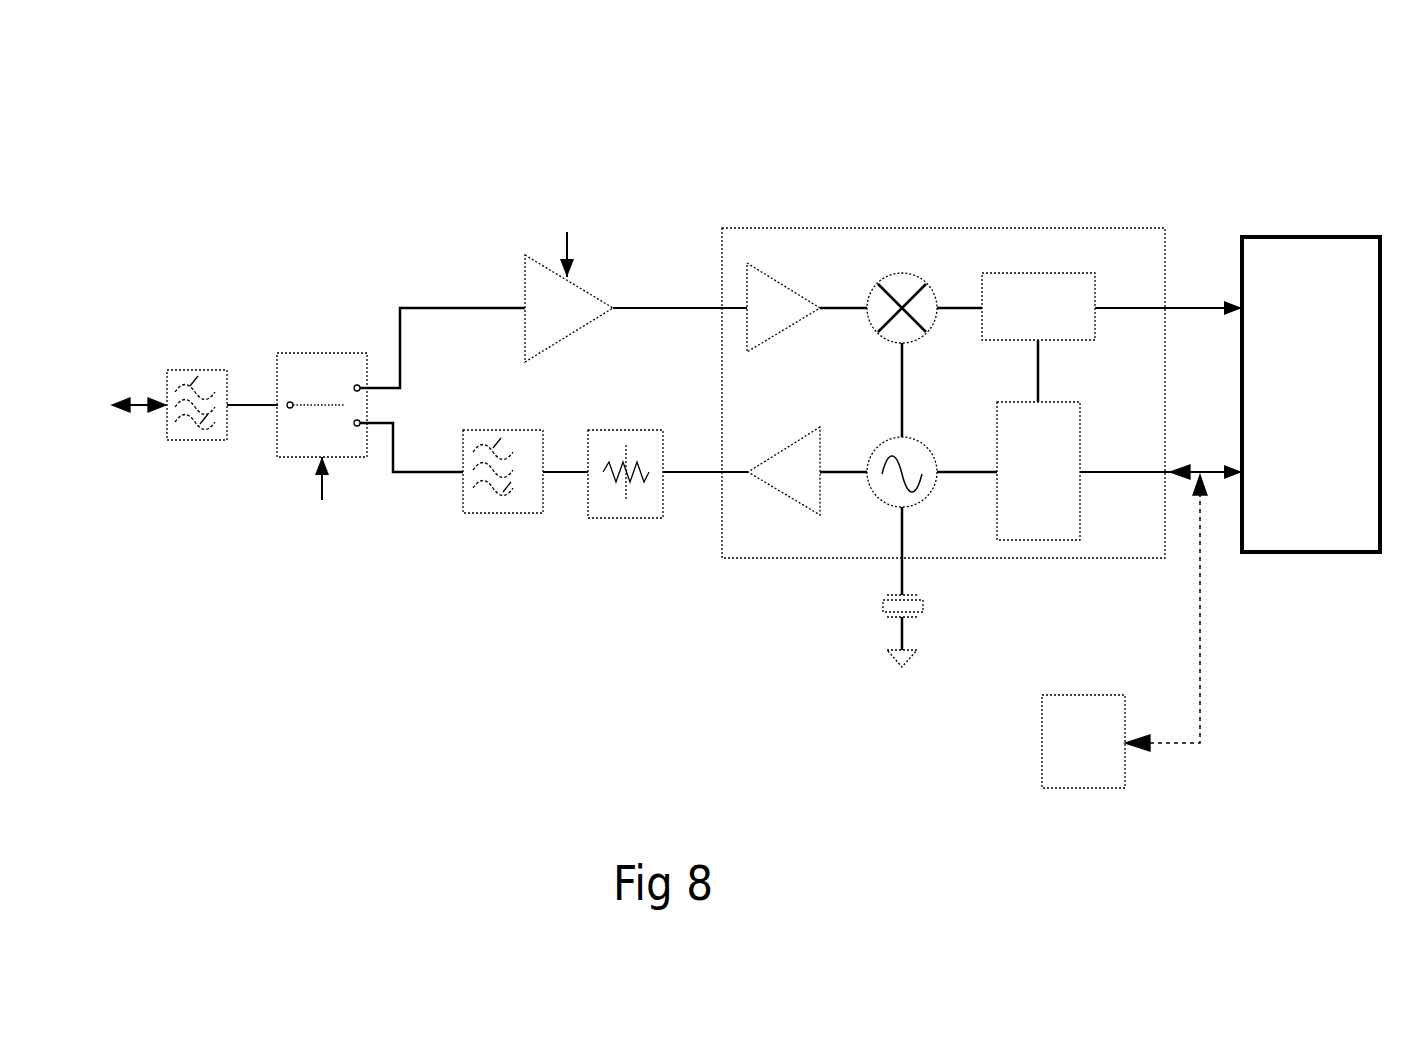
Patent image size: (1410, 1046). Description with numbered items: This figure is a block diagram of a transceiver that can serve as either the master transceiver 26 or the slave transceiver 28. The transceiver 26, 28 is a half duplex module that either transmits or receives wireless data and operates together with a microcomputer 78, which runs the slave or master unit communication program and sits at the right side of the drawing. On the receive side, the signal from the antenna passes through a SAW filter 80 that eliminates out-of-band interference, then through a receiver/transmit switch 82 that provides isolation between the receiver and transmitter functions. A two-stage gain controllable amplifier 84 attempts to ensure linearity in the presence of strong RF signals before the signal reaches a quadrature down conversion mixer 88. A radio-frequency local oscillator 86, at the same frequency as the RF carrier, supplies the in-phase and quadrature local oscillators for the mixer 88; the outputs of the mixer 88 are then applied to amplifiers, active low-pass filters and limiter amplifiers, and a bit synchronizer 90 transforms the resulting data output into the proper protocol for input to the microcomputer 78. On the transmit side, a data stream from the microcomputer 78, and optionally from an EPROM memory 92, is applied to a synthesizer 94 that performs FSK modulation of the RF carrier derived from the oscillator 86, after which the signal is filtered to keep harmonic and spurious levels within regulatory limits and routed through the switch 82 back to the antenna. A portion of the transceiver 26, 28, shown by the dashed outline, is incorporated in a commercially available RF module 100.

The master transceiver 26 is at (706, 432).
The slave transceiver 28 is at (706, 432).
The microcomputer 78 is at (1308, 235).
The SAW filter 80 is at (195, 367).
The receiver/transmit switch 82 is at (358, 350).
The two-stage gain controllable amplifier 84 is at (580, 281).
The radio-frequency local oscillator 86 is at (880, 608).
The quadrature down conversion mixer 88 is at (912, 270).
The bit synchronizer 90 is at (1042, 268).
The EPROM memory 92 is at (1060, 693).
The synthesizer 94 is at (925, 440).
The RF module 100 is at (943, 358).